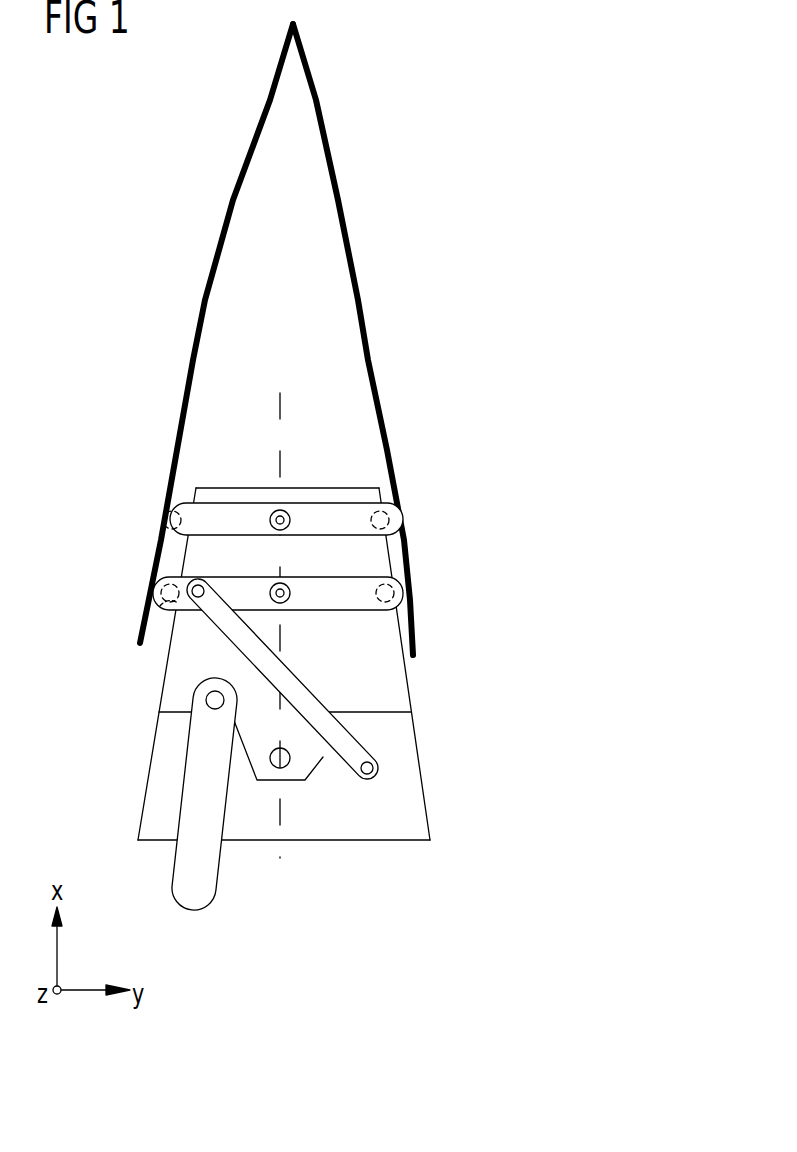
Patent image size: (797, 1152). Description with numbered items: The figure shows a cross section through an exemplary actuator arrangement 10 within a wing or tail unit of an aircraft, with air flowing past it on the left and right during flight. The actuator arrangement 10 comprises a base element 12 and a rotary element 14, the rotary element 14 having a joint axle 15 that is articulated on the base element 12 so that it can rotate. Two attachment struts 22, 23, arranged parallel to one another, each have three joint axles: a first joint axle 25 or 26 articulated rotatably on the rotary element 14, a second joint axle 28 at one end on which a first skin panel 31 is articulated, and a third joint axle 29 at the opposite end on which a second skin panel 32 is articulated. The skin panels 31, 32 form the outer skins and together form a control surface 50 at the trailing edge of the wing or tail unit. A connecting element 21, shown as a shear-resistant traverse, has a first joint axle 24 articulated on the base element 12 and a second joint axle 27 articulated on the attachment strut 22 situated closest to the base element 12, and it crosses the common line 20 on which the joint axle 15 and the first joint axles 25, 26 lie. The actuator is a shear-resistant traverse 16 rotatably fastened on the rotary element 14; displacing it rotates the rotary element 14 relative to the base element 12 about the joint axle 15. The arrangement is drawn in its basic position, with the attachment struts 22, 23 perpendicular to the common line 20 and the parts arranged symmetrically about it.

The actuator arrangement 10 is at (345, 664).
The base element 12 is at (405, 792).
The rotary element 14 is at (333, 648).
The joint axle 15 is at (282, 770).
The shear-resistant traverse 16 is at (185, 878).
The common line 20 is at (298, 452).
The connecting element 21 is at (248, 648).
The attachment strut 22 is at (402, 578).
The attachment strut 23 is at (350, 517).
The first joint axle of the connecting element 24 is at (362, 782).
The first joint axle 25 is at (172, 604).
The first joint axle 26 is at (268, 512).
The second joint axle of the connecting element 27 is at (186, 588).
The second joint axle 28 is at (162, 517).
The third joint axle 29 is at (392, 518).
The first skin panel 31 is at (228, 212).
The second skin panel 32 is at (340, 200).
The control surface 50 is at (290, 339).